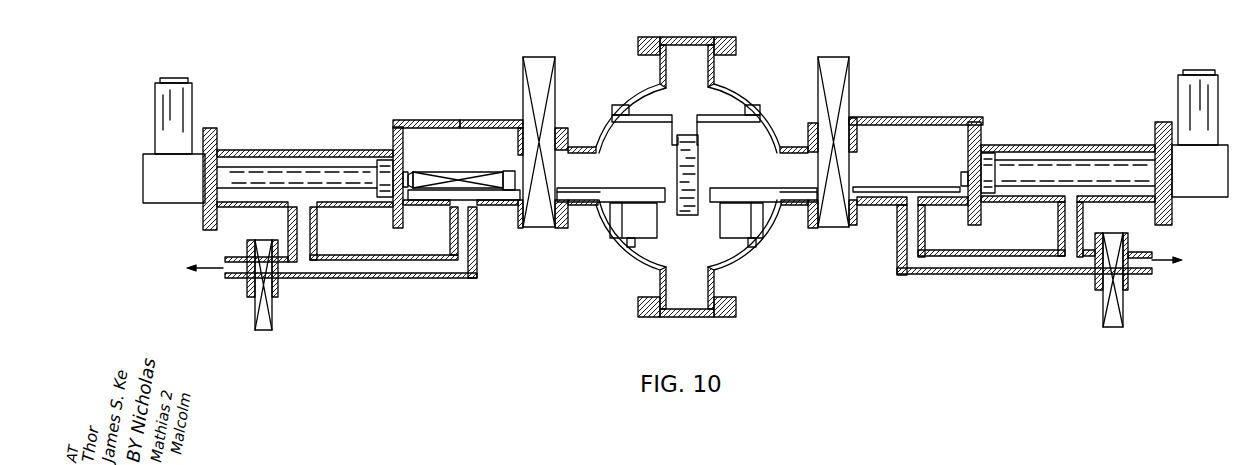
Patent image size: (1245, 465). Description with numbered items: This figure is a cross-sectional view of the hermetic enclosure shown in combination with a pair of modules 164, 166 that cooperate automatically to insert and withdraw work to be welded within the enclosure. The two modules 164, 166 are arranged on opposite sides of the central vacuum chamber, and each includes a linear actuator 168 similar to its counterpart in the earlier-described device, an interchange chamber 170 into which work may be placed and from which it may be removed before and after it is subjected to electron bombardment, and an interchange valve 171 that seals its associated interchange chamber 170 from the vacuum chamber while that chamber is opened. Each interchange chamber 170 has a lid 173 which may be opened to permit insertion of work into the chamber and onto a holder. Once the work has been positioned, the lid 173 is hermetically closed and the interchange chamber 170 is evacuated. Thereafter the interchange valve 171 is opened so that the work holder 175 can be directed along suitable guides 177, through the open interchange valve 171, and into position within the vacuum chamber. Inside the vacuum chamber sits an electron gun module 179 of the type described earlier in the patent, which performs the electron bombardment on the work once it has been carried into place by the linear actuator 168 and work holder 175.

The module 164 is at (458, 140).
The module 166 is at (952, 110).
The linear actuator 168 is at (305, 150).
The interchange chamber 170 is at (428, 135).
The interchange valve 171 is at (545, 68).
The lid 173 is at (491, 107).
The work holder 175 is at (475, 173).
The guides 177 is at (486, 207).
The electron gun module 179 is at (696, 170).